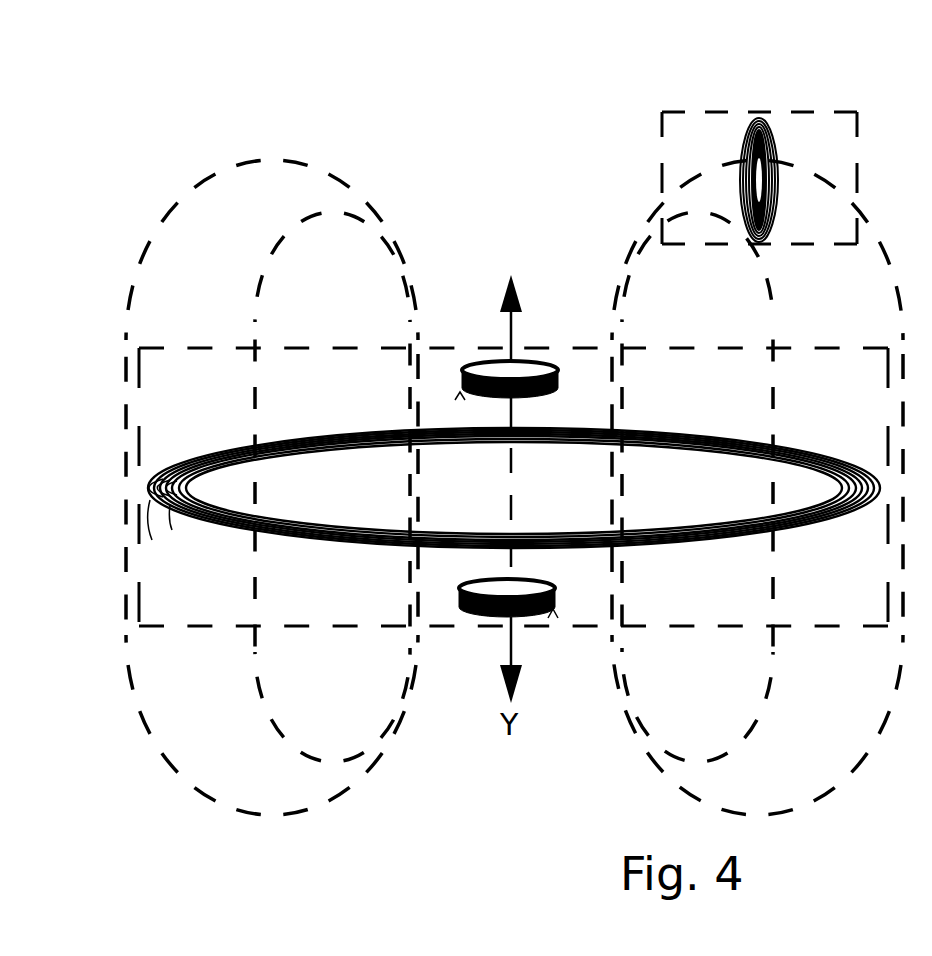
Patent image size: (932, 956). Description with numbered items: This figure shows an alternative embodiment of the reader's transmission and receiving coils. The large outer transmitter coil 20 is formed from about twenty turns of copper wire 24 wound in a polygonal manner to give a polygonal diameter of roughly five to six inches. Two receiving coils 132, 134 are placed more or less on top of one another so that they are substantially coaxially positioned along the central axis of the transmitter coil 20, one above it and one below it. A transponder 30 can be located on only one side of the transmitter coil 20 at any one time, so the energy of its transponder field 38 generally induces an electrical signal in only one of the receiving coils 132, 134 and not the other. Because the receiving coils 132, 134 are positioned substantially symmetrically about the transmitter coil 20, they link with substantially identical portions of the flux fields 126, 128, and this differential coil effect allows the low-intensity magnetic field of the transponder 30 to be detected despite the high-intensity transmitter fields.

The transmitter coil 20 is at (193, 460).
The copper wire 24 is at (148, 488).
The transponder 30 is at (763, 178).
The transponder field 38 is at (743, 147).
The flux field 126 is at (417, 327).
The flux field 128 is at (612, 307).
The receiving coil 132 is at (536, 365).
The receiving coil 134 is at (535, 617).